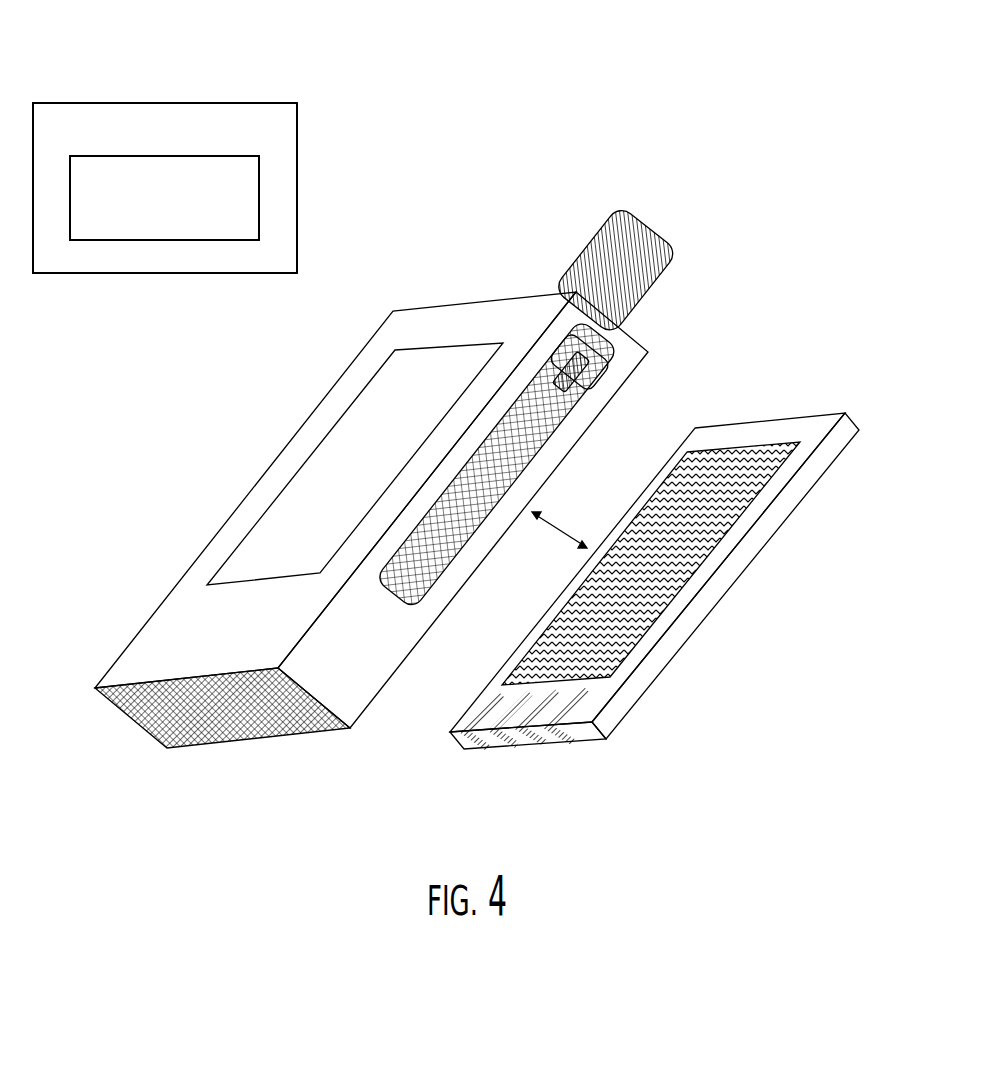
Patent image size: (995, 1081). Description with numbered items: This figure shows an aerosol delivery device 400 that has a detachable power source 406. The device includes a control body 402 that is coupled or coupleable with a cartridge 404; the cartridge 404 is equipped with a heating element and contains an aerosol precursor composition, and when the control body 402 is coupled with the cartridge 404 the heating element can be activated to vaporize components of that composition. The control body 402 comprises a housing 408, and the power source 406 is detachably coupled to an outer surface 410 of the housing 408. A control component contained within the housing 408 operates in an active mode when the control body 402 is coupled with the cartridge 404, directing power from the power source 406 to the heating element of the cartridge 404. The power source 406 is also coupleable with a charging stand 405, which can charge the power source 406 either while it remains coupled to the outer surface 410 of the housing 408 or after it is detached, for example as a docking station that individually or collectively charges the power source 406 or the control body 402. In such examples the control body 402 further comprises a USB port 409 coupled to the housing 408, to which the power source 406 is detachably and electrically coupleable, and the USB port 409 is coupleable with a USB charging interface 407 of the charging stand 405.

The aerosol delivery device 400 is at (428, 68).
The control body 402 is at (252, 644).
The cartridge 404 is at (653, 222).
The charging stand 405 is at (258, 135).
The power source 406 is at (760, 423).
The USB charging interface 407 is at (228, 222).
The housing 408 is at (383, 316).
The charging port 409 is at (578, 358).
The outer surface 410 is at (297, 733).